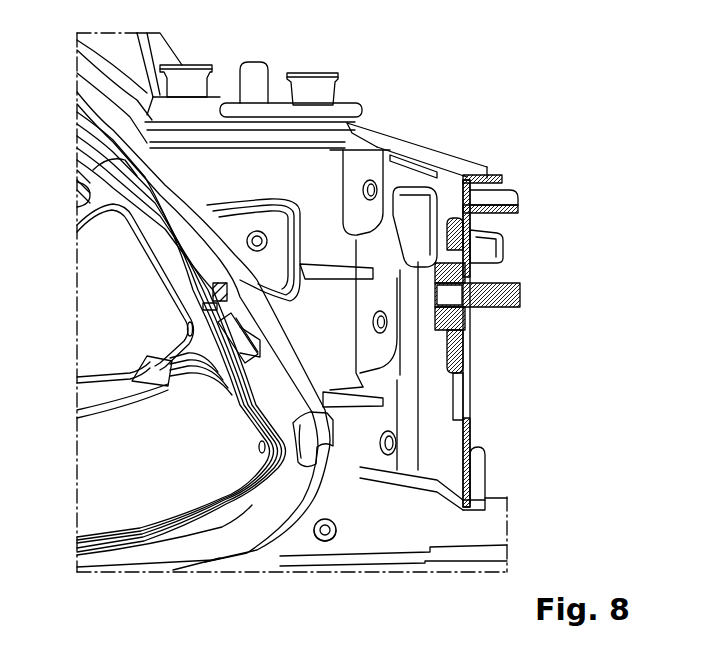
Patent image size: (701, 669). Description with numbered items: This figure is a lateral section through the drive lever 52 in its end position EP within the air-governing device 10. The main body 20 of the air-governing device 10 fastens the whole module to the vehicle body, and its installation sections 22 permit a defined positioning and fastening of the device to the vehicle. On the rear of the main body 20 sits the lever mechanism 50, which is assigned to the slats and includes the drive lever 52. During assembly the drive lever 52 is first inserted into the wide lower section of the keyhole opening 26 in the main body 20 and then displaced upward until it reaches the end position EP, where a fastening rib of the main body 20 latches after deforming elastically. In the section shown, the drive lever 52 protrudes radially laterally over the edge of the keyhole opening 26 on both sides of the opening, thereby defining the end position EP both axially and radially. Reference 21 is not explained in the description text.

The air-governing device 10 is at (490, 113).
The main body 20 is at (383, 132).
The rib of holder 21 is at (425, 160).
The installation sections 22 is at (252, 242).
The keyhole opening 26 is at (470, 392).
The lever mechanism 50 is at (333, 312).
The drive lever 52 is at (457, 260).
The end position EP is at (530, 295).